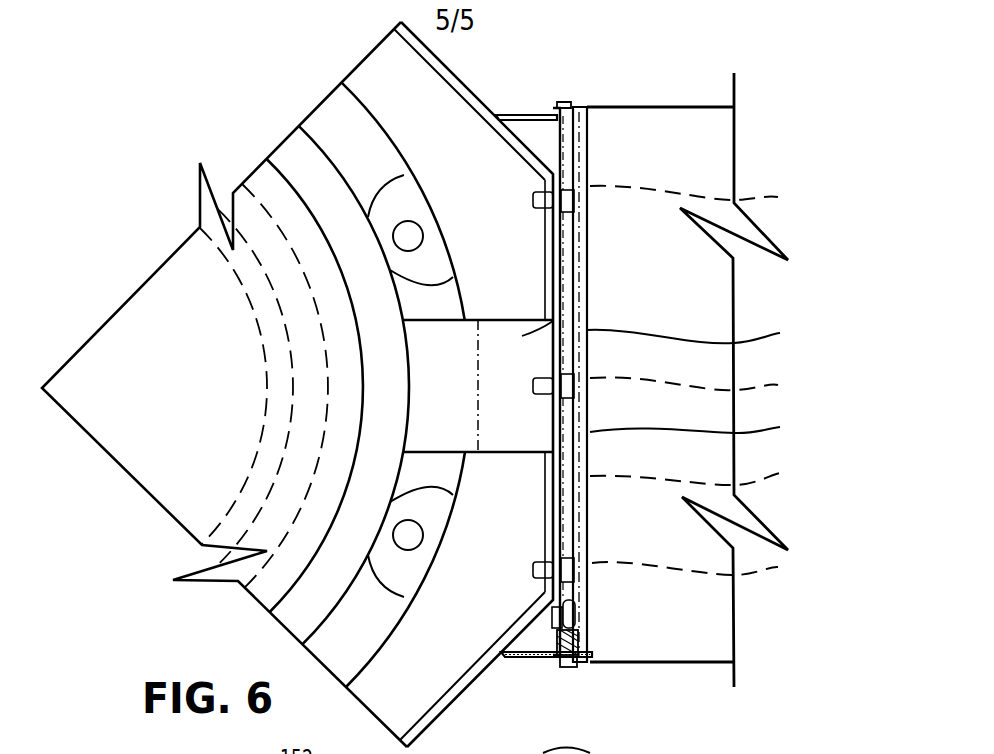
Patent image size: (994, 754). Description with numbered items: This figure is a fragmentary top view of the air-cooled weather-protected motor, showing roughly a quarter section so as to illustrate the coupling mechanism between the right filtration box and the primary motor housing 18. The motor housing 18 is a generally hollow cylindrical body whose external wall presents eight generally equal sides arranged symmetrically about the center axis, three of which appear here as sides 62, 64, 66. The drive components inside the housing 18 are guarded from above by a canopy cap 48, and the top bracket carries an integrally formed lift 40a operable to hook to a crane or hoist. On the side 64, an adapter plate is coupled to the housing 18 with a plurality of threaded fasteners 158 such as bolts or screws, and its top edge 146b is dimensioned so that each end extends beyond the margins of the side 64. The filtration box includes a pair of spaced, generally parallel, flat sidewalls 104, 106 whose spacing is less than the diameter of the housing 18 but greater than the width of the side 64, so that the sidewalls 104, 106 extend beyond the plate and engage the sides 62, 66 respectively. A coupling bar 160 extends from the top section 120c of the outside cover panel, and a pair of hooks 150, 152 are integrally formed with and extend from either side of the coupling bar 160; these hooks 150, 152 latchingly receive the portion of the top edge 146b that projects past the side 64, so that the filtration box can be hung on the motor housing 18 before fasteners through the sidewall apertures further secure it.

The primary motor housing 18 is at (392, 687).
The canopy cap 48 is at (144, 452).
The side 62 is at (473, 690).
The side 64 is at (592, 276).
The side 66 is at (468, 86).
The lift 40a is at (670, 333).
The sidewall 104 is at (560, 668).
The sidewall 106 is at (552, 103).
The top section 120c is at (710, 430).
The top edge 146b is at (710, 476).
The hook 150 is at (556, 626).
The hook 152 is at (548, 143).
The threaded fasteners 158 is at (703, 379).
The coupling bar 160 is at (583, 107).